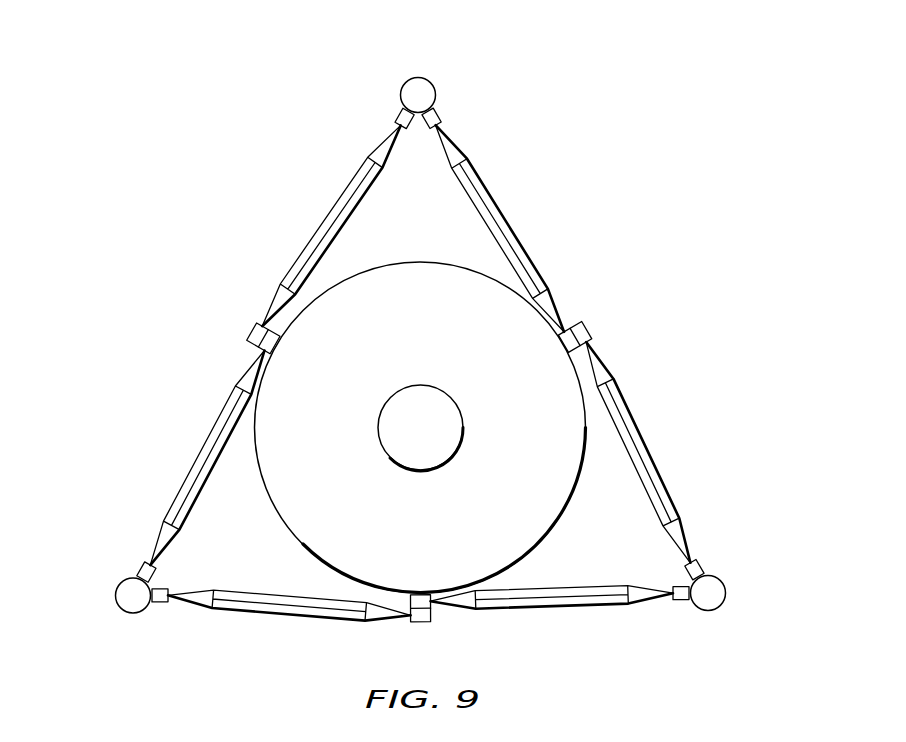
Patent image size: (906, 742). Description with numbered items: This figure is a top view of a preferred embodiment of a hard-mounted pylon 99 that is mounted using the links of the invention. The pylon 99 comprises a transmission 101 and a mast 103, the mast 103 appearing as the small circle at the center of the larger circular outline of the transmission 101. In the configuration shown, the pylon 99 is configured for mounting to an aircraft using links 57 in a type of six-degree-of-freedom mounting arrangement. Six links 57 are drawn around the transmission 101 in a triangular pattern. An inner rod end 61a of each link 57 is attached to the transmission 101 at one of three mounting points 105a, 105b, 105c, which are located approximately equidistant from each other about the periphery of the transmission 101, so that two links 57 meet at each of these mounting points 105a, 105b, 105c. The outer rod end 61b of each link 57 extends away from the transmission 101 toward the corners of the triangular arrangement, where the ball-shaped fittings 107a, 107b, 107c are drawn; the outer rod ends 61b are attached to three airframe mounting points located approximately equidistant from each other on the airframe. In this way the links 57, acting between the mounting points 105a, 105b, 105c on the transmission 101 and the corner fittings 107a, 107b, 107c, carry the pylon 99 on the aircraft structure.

The pylon 99 is at (318, 132).
The link 57 is at (319, 227).
The inner rod end 61a is at (432, 618).
The outer rod end 61b is at (160, 605).
The transmission 101 is at (420, 261).
The mast 103 is at (464, 430).
The mounting point 105a is at (420, 594).
The mounting point 105b is at (279, 341).
The mounting point 105c is at (562, 341).
The corner ball joint 107a is at (118, 603).
The corner ball joint 107b is at (433, 86).
The corner ball joint 107c is at (726, 601).